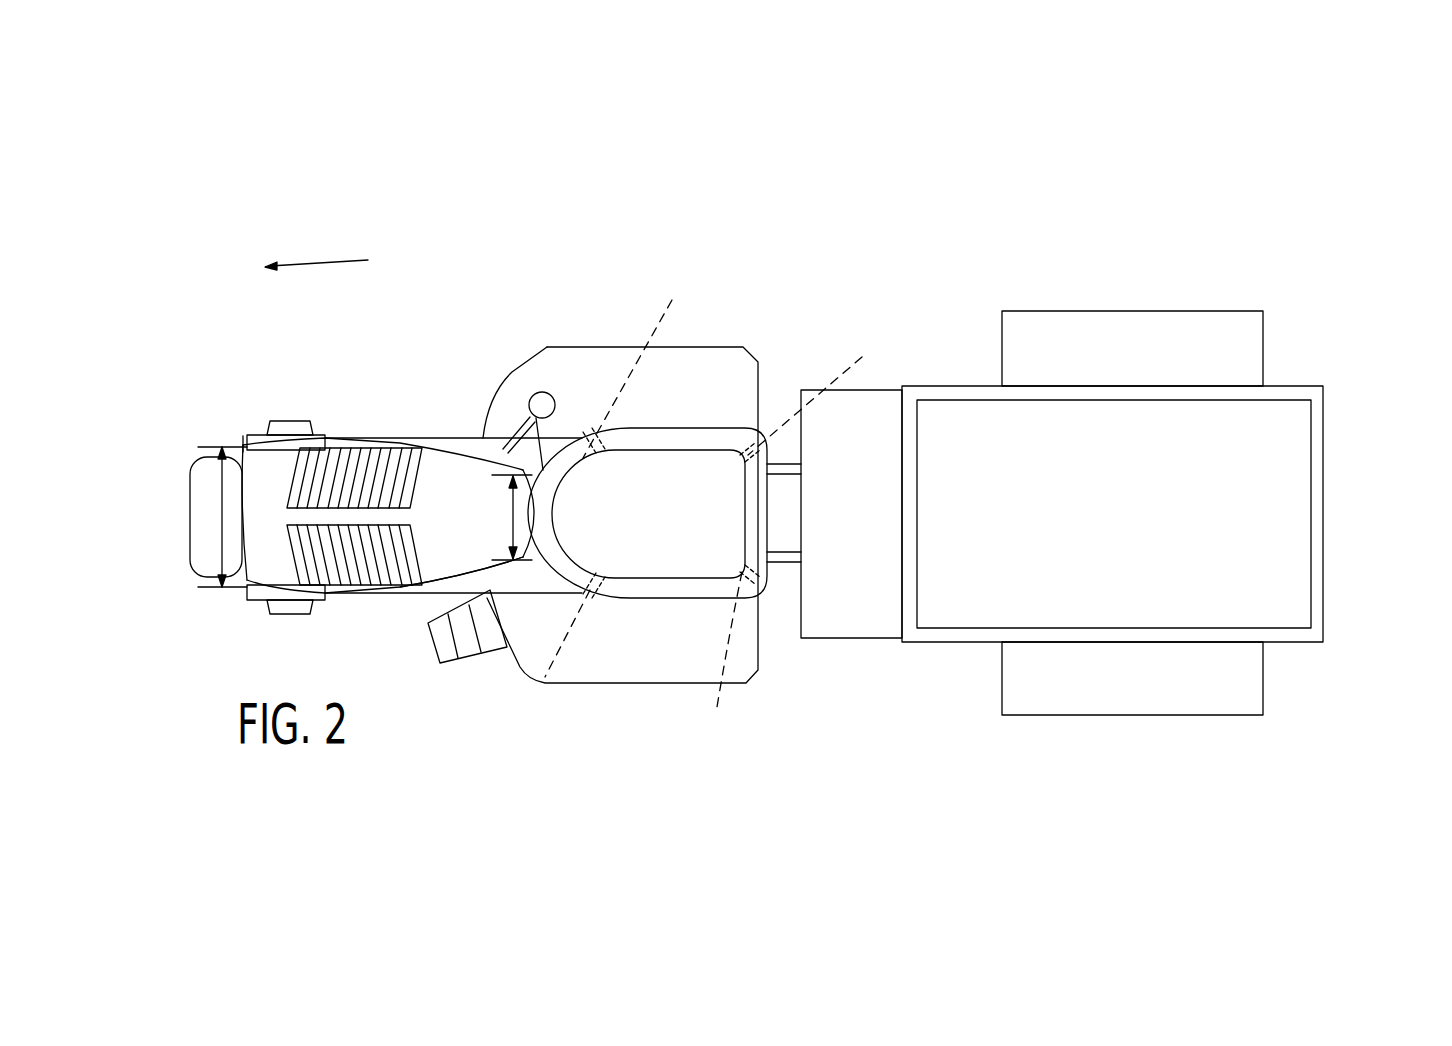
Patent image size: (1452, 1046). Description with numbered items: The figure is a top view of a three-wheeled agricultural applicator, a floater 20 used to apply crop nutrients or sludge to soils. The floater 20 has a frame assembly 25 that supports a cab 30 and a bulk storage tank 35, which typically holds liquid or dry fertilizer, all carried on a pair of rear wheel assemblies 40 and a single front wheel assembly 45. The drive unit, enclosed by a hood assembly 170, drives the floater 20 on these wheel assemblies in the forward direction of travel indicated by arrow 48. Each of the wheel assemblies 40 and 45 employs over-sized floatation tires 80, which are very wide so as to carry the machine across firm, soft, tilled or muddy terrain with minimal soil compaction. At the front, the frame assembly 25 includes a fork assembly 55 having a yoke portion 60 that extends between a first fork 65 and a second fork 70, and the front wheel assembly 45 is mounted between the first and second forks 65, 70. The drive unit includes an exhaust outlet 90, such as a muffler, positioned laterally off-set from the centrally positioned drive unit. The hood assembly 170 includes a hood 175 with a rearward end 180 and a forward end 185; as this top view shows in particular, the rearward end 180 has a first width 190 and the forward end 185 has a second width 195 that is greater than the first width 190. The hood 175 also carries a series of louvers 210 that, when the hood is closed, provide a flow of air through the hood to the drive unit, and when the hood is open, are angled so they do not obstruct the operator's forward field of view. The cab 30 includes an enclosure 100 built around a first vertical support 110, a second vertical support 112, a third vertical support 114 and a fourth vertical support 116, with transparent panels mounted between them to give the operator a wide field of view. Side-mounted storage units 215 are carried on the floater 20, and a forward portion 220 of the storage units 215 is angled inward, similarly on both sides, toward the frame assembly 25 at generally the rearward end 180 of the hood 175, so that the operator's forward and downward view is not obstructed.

The floater 20 is at (413, 153).
The frame assembly 25 is at (777, 572).
The cab 30 is at (650, 546).
The bulk storage tank 35 is at (1294, 475).
The rear wheel assemblies 40 is at (1219, 297).
The front wheel assembly 45 is at (198, 544).
The forward direction of travel 48 is at (338, 253).
The fork assembly 55 is at (240, 430).
The yoke portion 60 is at (243, 437).
The first fork 65 is at (297, 427).
The second fork 70 is at (293, 612).
The floatation tires 80 is at (198, 500).
The exhaust outlet 90 is at (560, 383).
The enclosure 100 is at (660, 420).
The first vertical support 110 is at (661, 360).
The second vertical support 112 is at (527, 705).
The third vertical support 114 is at (739, 661).
The fourth vertical support 116 is at (827, 388).
The hood assembly 170 is at (437, 574).
The hood 175 is at (453, 577).
The rearward end 180 is at (538, 455).
The forward end 185 is at (258, 481).
The first width 190 is at (491, 517).
The second width 195 is at (243, 578).
The louvers 210 is at (390, 452).
The side-mounted storage units 215 is at (742, 409).
The forward portion 220 is at (534, 338).